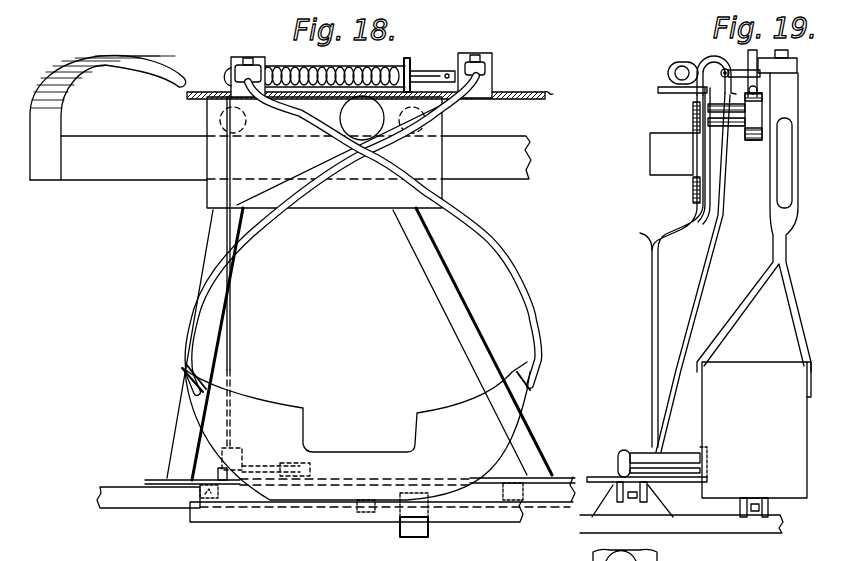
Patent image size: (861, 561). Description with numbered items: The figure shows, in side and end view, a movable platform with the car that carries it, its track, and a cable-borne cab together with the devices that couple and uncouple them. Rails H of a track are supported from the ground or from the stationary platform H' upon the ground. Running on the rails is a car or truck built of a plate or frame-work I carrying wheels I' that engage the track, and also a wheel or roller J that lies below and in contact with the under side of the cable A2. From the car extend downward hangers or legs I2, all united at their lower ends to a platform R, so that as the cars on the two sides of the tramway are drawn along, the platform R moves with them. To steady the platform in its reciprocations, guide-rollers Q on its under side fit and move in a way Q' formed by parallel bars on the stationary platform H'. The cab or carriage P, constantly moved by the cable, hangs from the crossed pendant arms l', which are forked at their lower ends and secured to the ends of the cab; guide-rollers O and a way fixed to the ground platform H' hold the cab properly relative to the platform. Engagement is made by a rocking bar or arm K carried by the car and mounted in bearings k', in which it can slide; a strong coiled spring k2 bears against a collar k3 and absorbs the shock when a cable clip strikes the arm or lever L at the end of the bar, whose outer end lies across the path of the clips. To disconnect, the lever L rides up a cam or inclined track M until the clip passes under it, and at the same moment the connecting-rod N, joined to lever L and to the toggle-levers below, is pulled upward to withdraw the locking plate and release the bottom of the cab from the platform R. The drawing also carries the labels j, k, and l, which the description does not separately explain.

In FIG. 18, the cam or inclined track M is at (108, 117).
In FIG. 19, the cam or inclined track M is at (697, 66).
In FIG. 18, the rails of a track H is at (280, 158).
In FIG. 19, the rails of a track H is at (671, 154).
In FIG. 18, the stationary platform H' is at (408, 516).
In FIG. 19, the stationary platform H' is at (681, 538).
In FIG. 18, the plate or frame-work of car or truck I is at (324, 152).
In FIG. 19, the plate or frame-work of car or truck I is at (691, 267).
In FIG. 18, the wheels I' is at (364, 151).
In FIG. 19, the wheels I' is at (682, 145).
In FIG. 18, the hangers or legs I2 is at (470, 312).
In FIG. 18, the wheel or roller J is at (362, 118).
In FIG. 19, the wheel or roller J is at (754, 112).
In FIG. 18, the bracket j is at (482, 93).
In FIG. 19, the bracket j is at (760, 86).
In FIG. 18, the rocking bar or arm K is at (334, 68).
In FIG. 19, the rod k is at (747, 70).
In FIG. 18, the bearings k' is at (432, 55).
In FIG. 19, the bearings k' is at (661, 69).
In FIG. 18, the coiled spring k2 is at (372, 68).
In FIG. 18, the collar k3 is at (412, 80).
In FIG. 18, the arm or lever L is at (234, 77).
In FIG. 19, the arm or lever L is at (708, 73).
In FIG. 19, the plate l is at (788, 57).
In FIG. 18, the pendants or downwardly-extending arms l' is at (360, 234).
In FIG. 19, the pendants or downwardly-extending arms l' is at (766, 222).
In FIG. 18, the connecting-rod N is at (231, 340).
In FIG. 19, the connecting-rod N is at (717, 230).
In FIG. 18, the guide-rollers O is at (362, 503).
In FIG. 19, the guide-rollers O is at (769, 502).
In FIG. 18, the cab or carriage P is at (356, 431).
In FIG. 19, the cab or carriage P is at (756, 430).
In FIG. 18, the guide-rollers Q is at (188, 511).
In FIG. 19, the guide-rollers Q is at (653, 499).
In FIG. 18, the way Q' is at (527, 507).
In FIG. 19, the way Q' is at (605, 498).
In FIG. 18, the platform R is at (360, 472).
In FIG. 19, the platform R is at (647, 464).
In FIG. 18, the cable A2 is at (545, 95).
In FIG. 19, the cable A2 is at (752, 88).